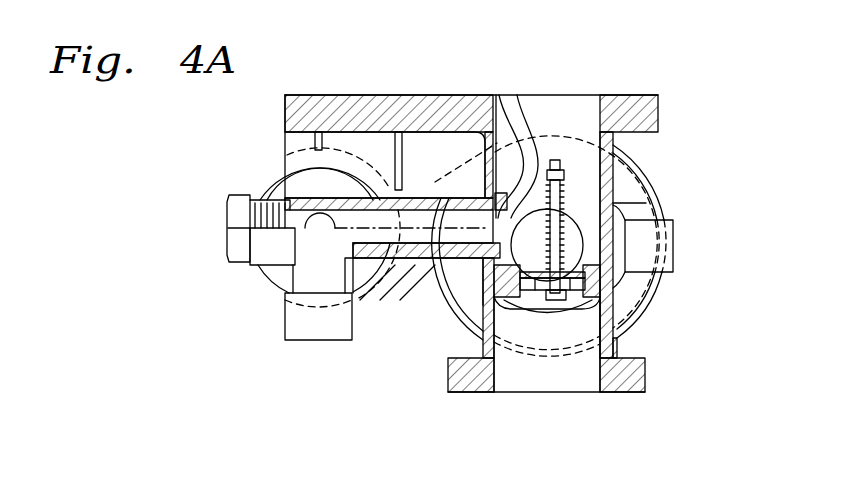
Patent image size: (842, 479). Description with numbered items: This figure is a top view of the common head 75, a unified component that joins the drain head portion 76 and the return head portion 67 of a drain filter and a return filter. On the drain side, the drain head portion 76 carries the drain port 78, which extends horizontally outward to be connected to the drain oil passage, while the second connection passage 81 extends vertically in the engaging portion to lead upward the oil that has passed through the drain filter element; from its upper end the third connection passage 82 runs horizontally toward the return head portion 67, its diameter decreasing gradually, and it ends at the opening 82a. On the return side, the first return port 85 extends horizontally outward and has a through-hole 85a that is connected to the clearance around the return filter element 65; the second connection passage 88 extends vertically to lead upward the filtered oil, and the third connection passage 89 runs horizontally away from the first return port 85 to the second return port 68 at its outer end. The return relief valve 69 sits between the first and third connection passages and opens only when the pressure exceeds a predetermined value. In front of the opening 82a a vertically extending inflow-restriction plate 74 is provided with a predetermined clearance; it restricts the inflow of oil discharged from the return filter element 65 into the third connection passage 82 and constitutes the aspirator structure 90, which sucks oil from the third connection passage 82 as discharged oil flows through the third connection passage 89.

The return filter element 65 is at (642, 178).
The return head portion 67 is at (644, 206).
The second return port 68 is at (627, 95).
The return relief valve 69 is at (547, 344).
The inflow-restriction plate 74 is at (515, 100).
The common head 75 is at (582, 95).
The drain head portion 76 is at (358, 290).
The drain port 78 is at (337, 333).
The second connection passage 81 is at (358, 262).
The third connection passage 82 is at (370, 258).
The opening 82a is at (480, 205).
The first return port 85 is at (642, 393).
The through-hole 85a is at (492, 370).
The second connection passage 88 is at (570, 222).
The third connection passage 89 is at (502, 106).
The aspirator structure 90 is at (535, 129).